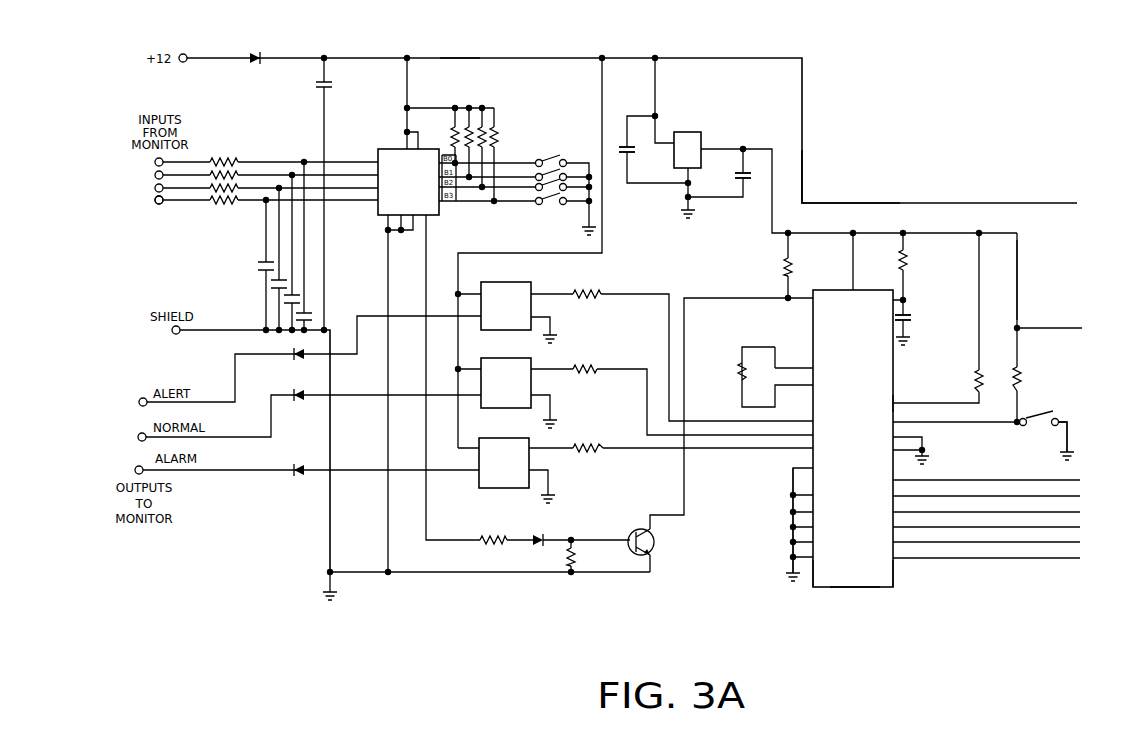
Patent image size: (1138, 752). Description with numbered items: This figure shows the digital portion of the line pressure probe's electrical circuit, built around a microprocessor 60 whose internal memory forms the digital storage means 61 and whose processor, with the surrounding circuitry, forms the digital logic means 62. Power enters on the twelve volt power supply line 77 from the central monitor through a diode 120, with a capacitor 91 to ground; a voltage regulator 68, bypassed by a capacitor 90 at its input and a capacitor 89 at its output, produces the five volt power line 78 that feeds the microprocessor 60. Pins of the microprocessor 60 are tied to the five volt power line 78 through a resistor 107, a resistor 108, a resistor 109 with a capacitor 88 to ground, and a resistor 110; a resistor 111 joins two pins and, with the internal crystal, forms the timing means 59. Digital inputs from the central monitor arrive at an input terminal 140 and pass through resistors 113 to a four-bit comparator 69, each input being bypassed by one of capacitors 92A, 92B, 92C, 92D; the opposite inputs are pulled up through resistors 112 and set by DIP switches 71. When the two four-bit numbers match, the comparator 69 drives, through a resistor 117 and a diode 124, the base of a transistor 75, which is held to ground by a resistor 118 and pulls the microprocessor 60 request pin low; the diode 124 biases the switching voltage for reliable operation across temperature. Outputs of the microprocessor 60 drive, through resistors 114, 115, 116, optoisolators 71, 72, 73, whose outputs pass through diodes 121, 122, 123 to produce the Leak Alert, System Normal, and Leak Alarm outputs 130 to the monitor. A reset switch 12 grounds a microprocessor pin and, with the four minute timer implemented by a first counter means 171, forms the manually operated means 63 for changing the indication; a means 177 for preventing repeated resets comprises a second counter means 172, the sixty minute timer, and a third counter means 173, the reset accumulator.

The +12 volt power supply line 77 is at (463, 58).
The diode 120 is at (258, 62).
The capacitor 91 is at (331, 82).
The resistors 113 is at (229, 149).
The input terminal 140 is at (153, 207).
The 4-bit comparator 69 is at (383, 148).
The resistors 112 is at (506, 126).
The DIP switches and optoisolator 71 is at (546, 147).
The capacitor 90 is at (624, 147).
The voltage regulator 68 is at (688, 132).
The capacitor 89 is at (735, 175).
The digital logic means 62 is at (863, 192).
The capacitor 92A is at (258, 262).
The capacitor 92B is at (271, 288).
The capacitor 92C is at (300, 298).
The capacitor 92D is at (312, 317).
The outputs 130 is at (144, 396).
The diode 121 is at (307, 364).
The diode 122 is at (300, 401).
The diode 123 is at (300, 476).
The optoisolator 72 is at (507, 358).
The optoisolator 73 is at (505, 488).
The resistor 114 is at (598, 293).
The resistor 115 is at (584, 364).
The resistor 116 is at (590, 443).
The resistor 117 is at (492, 545).
The diode 124 is at (533, 545).
The resistor 118 is at (576, 553).
The transistor 75 is at (654, 548).
The resistor 110 is at (784, 262).
The first counter means 171 is at (799, 351).
The resistor 111 is at (739, 371).
The resistor 109 is at (908, 262).
The capacitor 88 is at (911, 317).
The resistor 108 is at (973, 378).
The resistor 107 is at (1021, 384).
The third counter means 173 is at (900, 391).
The +5 volt power line 78 is at (1018, 272).
The reset switch 12 is at (1058, 412).
The manually operated means 63 is at (1100, 417).
The second counter means 172 is at (782, 461).
The microprocessor 60 is at (895, 578).
The digital storage means 61 is at (832, 594).
The timing means 59 is at (859, 601).
The means for preventing 177 is at (888, 601).